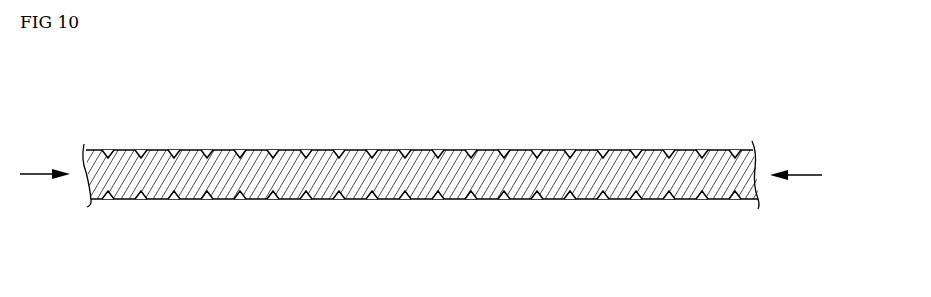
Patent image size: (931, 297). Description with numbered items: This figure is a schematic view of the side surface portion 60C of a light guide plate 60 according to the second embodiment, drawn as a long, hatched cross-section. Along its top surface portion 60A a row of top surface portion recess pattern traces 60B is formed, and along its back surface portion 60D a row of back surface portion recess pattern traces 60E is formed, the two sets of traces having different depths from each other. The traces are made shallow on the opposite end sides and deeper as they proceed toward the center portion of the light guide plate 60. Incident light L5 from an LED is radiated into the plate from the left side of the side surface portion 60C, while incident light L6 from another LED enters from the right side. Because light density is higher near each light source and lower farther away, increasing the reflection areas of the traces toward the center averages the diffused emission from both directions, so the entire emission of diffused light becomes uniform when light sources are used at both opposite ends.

The light guide plate 60 is at (594, 107).
The top surface portion 60A is at (383, 149).
The top surface portion recess pattern trace 60B is at (436, 150).
The side surface portion 60C is at (760, 174).
The back surface portion 60D is at (555, 200).
The back surface portion recess pattern trace 60E is at (605, 200).
The incident light L5 is at (45, 164).
The incident light L6 is at (796, 165).